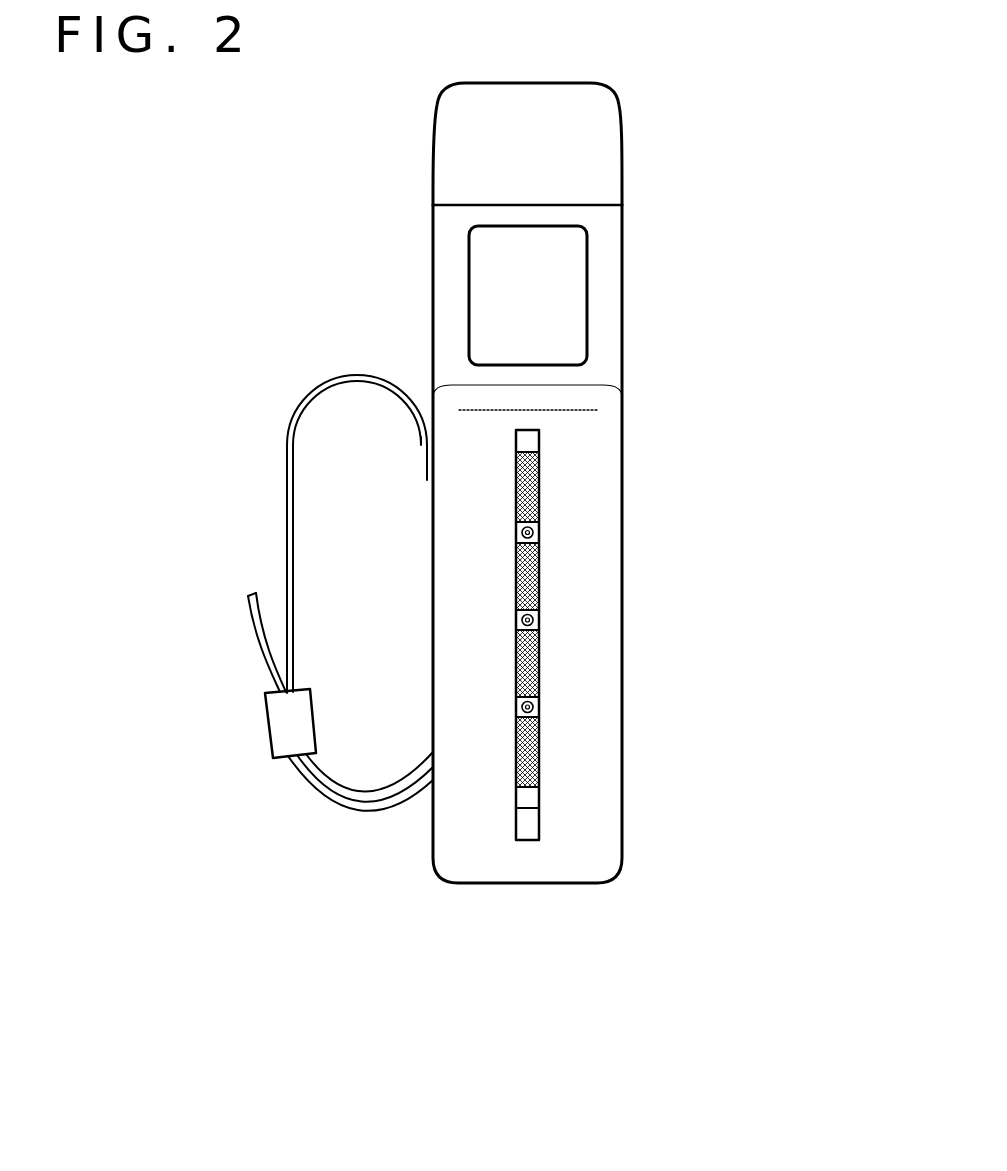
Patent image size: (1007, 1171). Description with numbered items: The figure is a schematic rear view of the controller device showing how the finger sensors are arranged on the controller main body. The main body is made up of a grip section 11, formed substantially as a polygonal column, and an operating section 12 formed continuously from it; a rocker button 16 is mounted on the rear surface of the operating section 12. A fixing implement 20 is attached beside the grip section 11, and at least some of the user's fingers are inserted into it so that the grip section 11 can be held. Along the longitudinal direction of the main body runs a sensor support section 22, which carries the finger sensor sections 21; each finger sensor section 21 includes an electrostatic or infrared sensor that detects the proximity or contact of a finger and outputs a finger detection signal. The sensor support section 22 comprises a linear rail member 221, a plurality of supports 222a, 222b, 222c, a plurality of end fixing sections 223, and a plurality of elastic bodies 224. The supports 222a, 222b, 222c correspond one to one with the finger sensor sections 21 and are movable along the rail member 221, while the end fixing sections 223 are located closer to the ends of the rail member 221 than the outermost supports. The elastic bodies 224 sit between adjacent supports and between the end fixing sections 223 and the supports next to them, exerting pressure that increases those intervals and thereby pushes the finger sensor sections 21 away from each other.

The grip section 11 is at (640, 865).
The operating section 12 is at (640, 225).
The rocker button 16 is at (543, 295).
The fixing implement 20 is at (325, 798).
The finger sensor section 21 is at (521, 532).
The sensor support section 22 is at (596, 670).
The rail member 221 is at (539, 503).
The support 222a is at (540, 522).
The support 222b is at (540, 612).
The support 222c is at (540, 700).
The end fixing section 223 is at (532, 442).
The elastic body 224 is at (539, 485).